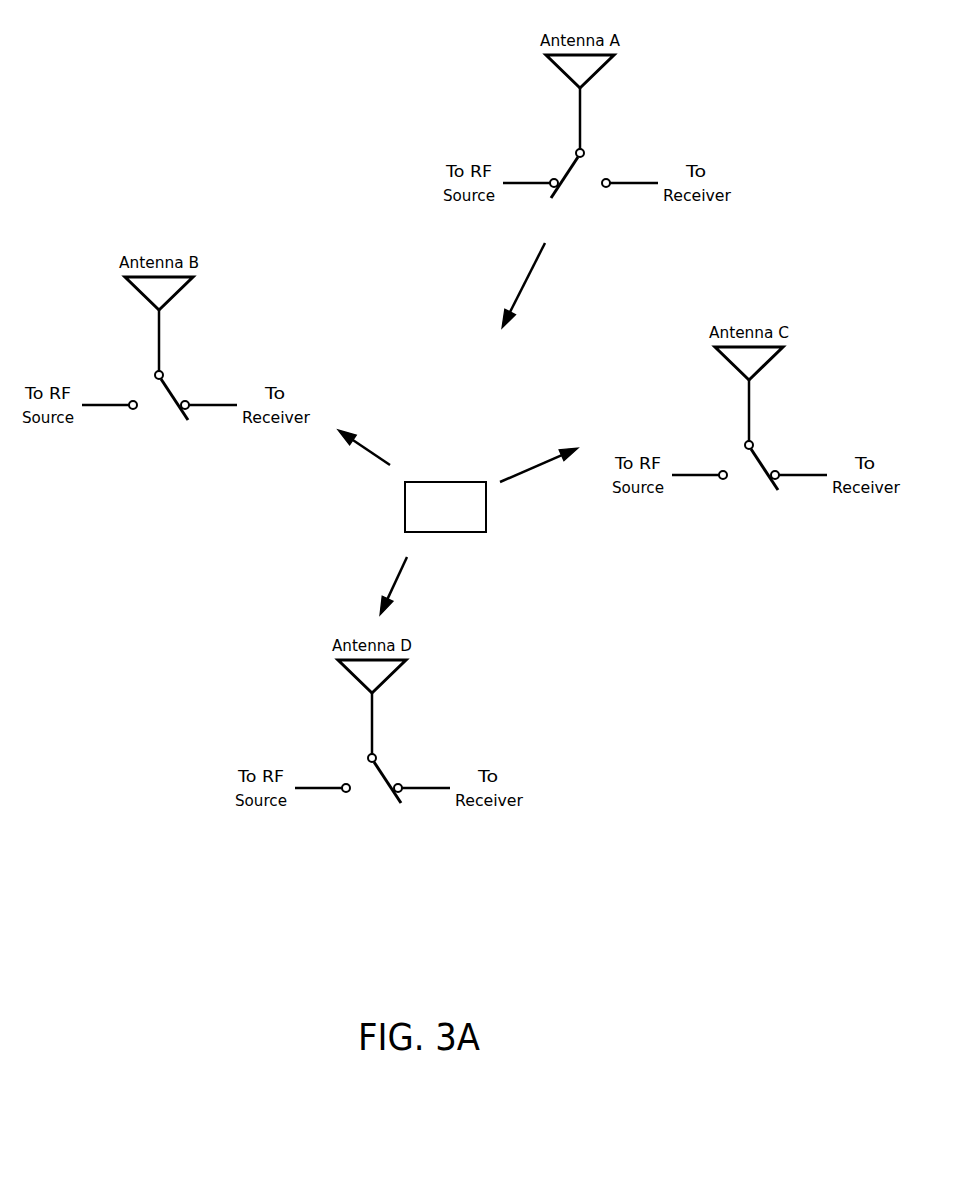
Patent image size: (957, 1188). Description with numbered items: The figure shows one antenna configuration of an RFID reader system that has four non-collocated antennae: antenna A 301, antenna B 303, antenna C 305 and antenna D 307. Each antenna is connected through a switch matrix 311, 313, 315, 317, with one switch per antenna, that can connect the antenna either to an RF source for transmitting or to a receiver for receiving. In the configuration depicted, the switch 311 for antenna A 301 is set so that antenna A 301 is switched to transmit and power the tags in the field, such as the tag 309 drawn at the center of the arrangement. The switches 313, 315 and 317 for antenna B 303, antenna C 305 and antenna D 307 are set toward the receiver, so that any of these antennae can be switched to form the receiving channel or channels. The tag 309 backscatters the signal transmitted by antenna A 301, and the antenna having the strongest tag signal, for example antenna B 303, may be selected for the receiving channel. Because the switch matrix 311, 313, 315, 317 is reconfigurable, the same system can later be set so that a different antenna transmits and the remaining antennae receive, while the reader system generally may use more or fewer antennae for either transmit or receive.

The antenna A 301 is at (556, 69).
The antenna B 303 is at (135, 291).
The antenna C 305 is at (725, 361).
The antenna D 307 is at (348, 674).
The tag 309 is at (486, 520).
The switch matrix 311 is at (563, 182).
The switch matrix 313 is at (177, 399).
The switch matrix 315 is at (767, 469).
The switch matrix 317 is at (390, 782).